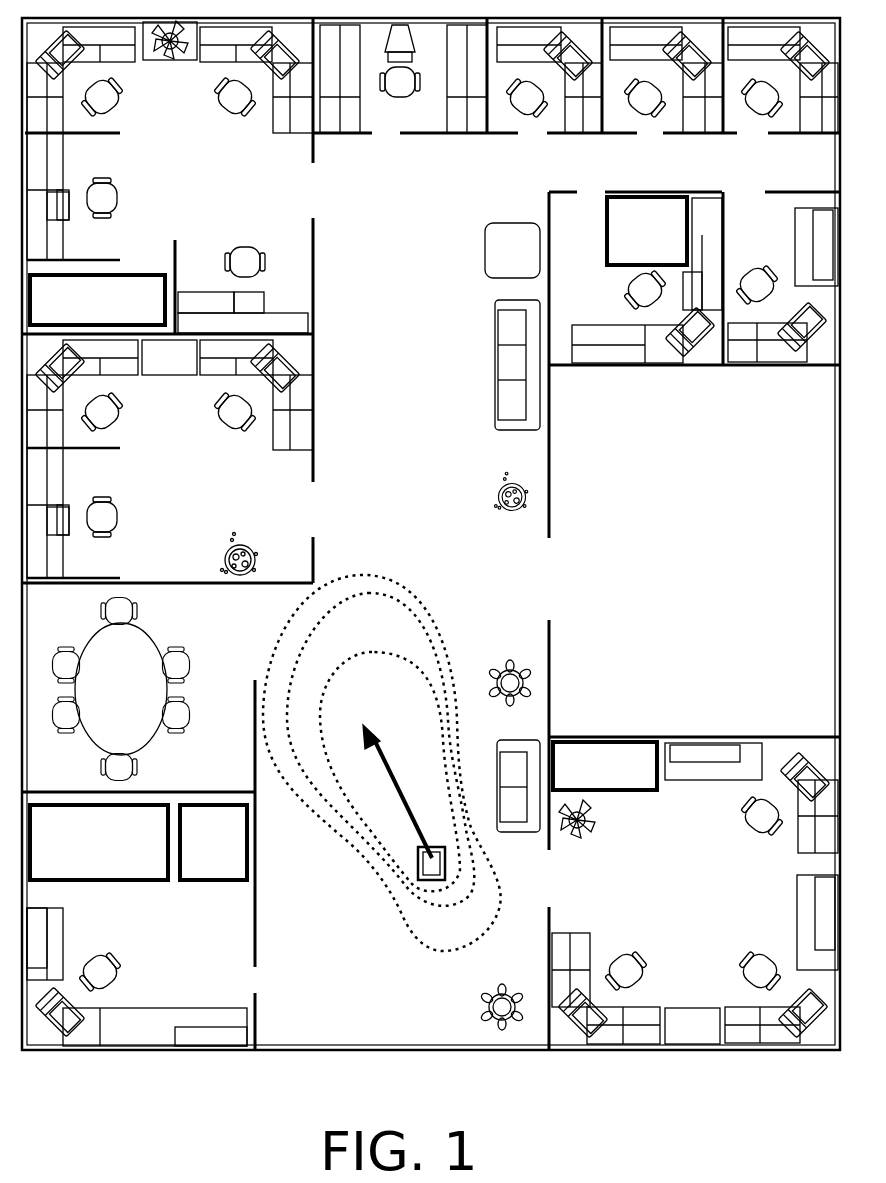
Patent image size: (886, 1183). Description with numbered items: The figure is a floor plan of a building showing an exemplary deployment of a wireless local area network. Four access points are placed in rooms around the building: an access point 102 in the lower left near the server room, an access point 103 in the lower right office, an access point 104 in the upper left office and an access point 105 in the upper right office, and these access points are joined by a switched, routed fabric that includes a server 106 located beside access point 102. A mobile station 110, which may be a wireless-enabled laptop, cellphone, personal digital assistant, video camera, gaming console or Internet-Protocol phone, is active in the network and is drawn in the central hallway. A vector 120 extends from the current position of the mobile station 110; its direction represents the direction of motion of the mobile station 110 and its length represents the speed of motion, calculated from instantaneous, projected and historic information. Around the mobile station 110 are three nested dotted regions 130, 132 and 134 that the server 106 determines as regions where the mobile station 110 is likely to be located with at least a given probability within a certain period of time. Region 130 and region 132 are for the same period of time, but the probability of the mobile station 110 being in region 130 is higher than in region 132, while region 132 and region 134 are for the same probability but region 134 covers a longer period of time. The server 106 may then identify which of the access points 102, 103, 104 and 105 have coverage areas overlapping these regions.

The access point 102 is at (137, 925).
The access point 103 is at (695, 893).
The access point 104 is at (170, 177).
The access point 105 is at (647, 280).
The server 106 is at (99, 842).
The mobile station 110 is at (412, 865).
The vector 120 is at (400, 800).
The region 130 is at (342, 675).
The region 132 is at (400, 603).
The region 134 is at (430, 610).